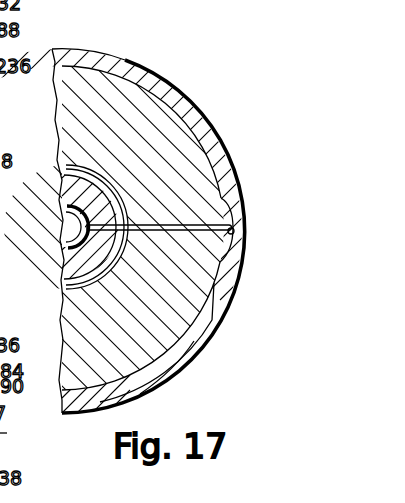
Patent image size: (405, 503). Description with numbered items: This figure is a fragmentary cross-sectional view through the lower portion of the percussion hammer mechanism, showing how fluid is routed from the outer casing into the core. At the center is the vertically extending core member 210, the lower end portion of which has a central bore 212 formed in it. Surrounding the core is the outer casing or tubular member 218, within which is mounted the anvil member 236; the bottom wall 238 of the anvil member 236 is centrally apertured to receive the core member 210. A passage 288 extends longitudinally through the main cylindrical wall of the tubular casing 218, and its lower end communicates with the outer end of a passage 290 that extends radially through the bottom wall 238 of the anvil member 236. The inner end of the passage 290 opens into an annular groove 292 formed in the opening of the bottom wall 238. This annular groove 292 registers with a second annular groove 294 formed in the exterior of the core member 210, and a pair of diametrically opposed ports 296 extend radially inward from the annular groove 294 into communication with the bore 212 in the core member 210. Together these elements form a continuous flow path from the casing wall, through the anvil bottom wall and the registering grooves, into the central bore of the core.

The core member 210 is at (56, 277).
The central bore 212 is at (67, 207).
The outer casing 218 is at (216, 121).
The anvil member 236 is at (151, 85).
The bottom wall 238 is at (194, 312).
The passage 288 is at (232, 234).
The passage 290 is at (232, 173).
The annular groove 292 is at (63, 165).
The annular groove 294 is at (71, 243).
The ports 296 is at (69, 223).